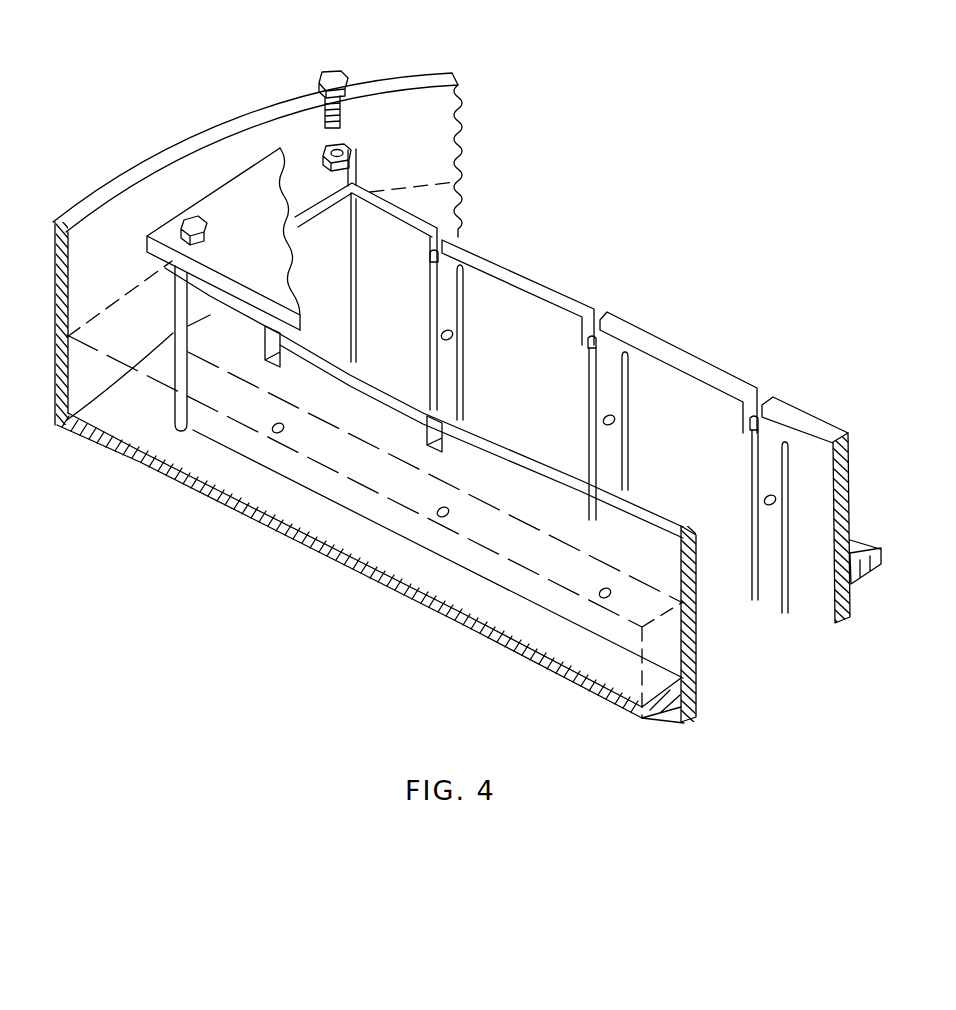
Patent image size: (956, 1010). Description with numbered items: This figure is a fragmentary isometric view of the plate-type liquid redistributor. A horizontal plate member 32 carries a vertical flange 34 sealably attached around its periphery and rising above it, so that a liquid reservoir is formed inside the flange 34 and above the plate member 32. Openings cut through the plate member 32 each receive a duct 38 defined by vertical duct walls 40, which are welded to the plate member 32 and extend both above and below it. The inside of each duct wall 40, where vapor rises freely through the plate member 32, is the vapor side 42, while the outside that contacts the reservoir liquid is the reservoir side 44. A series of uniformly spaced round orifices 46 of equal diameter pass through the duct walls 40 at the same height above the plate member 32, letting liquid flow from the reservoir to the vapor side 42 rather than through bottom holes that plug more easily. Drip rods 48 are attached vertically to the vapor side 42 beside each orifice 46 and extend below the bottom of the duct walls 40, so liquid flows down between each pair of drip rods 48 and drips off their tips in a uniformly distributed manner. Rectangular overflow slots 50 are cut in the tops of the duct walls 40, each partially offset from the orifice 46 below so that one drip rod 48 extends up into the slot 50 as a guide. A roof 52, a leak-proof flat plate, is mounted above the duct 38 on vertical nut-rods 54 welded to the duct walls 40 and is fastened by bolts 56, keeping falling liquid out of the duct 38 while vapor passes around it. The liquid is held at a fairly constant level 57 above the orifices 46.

The horizontal plate member 32 is at (222, 505).
The vertical flange 34 is at (428, 77).
The duct 38 is at (630, 286).
The vertical duct wall 40 is at (851, 508).
The vapor side 42 is at (697, 603).
The reservoir side 44 is at (668, 657).
The round orifice 46 is at (437, 514).
The drip rod 48 is at (752, 470).
The rectangular slot 50 is at (762, 403).
The roof 52 is at (262, 178).
The nut-rod 54 is at (173, 303).
The bolt 56 is at (322, 68).
The liquid level 57 is at (388, 452).